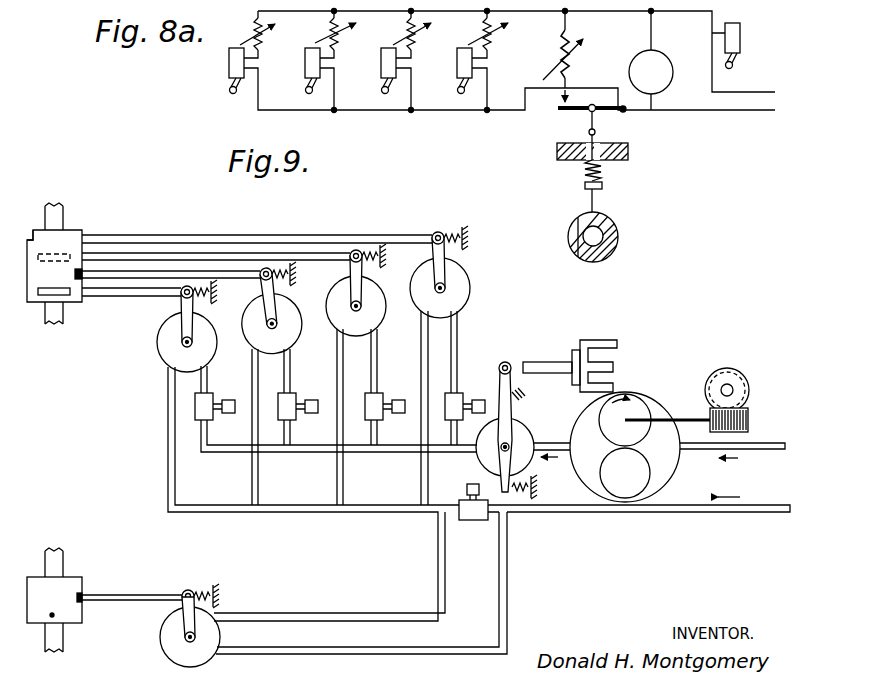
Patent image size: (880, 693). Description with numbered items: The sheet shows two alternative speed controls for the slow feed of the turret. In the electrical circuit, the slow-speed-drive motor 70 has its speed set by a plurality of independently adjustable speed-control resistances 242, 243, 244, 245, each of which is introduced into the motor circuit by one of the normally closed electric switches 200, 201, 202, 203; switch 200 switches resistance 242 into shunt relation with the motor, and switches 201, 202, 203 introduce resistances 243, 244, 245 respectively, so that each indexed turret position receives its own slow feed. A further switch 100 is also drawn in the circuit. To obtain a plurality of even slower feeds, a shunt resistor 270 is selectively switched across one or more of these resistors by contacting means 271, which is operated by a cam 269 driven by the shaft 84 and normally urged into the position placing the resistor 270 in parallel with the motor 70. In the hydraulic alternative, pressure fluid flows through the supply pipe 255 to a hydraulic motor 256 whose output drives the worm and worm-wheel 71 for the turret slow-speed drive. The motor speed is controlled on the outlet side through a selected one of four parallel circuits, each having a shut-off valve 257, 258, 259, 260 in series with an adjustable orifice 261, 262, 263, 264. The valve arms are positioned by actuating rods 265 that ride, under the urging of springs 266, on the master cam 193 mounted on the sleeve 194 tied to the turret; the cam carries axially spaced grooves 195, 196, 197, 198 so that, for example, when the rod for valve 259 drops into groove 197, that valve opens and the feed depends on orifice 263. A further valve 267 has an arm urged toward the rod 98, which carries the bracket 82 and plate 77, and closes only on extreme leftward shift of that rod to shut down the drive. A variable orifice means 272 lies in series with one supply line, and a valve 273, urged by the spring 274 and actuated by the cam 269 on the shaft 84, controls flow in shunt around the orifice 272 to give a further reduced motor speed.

In FIG. 8A, the speed-control resistance 244 is at (258, 22).
In FIG. 8A, the speed-control resistance 242 is at (328, 27).
In FIG. 8A, the speed-control resistance 243 is at (405, 28).
In FIG. 8A, the speed-control resistance 245 is at (481, 27).
In FIG. 8A, the shunt resistor 270 is at (580, 66).
In FIG. 8A, the slow-speed-drive motor 70 is at (671, 65).
In FIG. 8A, the switch 100 is at (740, 35).
In FIG. 8A, the electric switch 202 is at (229, 59).
In FIG. 8A, the electric switch 200 is at (305, 60).
In FIG. 8A, the electric switch 201 is at (381, 62).
In FIG. 8A, the electric switch 203 is at (457, 63).
In FIG. 8A, the contacting means 271 is at (562, 110).
In FIG. 8A, the cam 269 is at (603, 217).
In FIG. 9, the cam 269 is at (71, 583).
In FIG. 8A, the shaft 84 is at (603, 238).
In FIG. 9, the shaft 84 is at (63, 647).
In FIG. 9, the master cam 193 is at (32, 302).
In FIG. 9, the sleeve 194 is at (57, 203).
In FIG. 9, the groove 195 is at (28, 237).
In FIG. 9, the groove 196 is at (67, 251).
In FIG. 9, the groove 197 is at (75, 274).
In FIG. 9, the groove 198 is at (68, 298).
In FIG. 9, the actuating rods 265 is at (176, 243).
In FIG. 9, the springs 266 is at (370, 249).
In FIG. 9, the shut-off valve 260 is at (206, 333).
In FIG. 9, the shut-off valve 259 is at (290, 311).
In FIG. 9, the shut-off valve 258 is at (372, 298).
In FIG. 9, the shut-off valve 257 is at (463, 285).
In FIG. 9, the adjustable orifice 264 is at (212, 398).
In FIG. 9, the adjustable orifice 263 is at (294, 398).
In FIG. 9, the adjustable orifice 262 is at (381, 398).
In FIG. 9, the adjustable orifice 261 is at (462, 398).
In FIG. 9, the variable orifice means 272 is at (482, 521).
In FIG. 9, the valve 267 is at (491, 459).
In FIG. 9, the hydraulic motor 256 is at (664, 470).
In FIG. 9, the worm and worm-wheel 71 is at (755, 400).
In FIG. 9, the rod 98 is at (533, 364).
In FIG. 9, the bracket 82 is at (597, 342).
In FIG. 9, the plate 77 is at (574, 391).
In FIG. 9, the supply pipe 255 is at (753, 451).
In FIG. 9, the spring 274 is at (207, 588).
In FIG. 9, the valve 273 is at (192, 659).